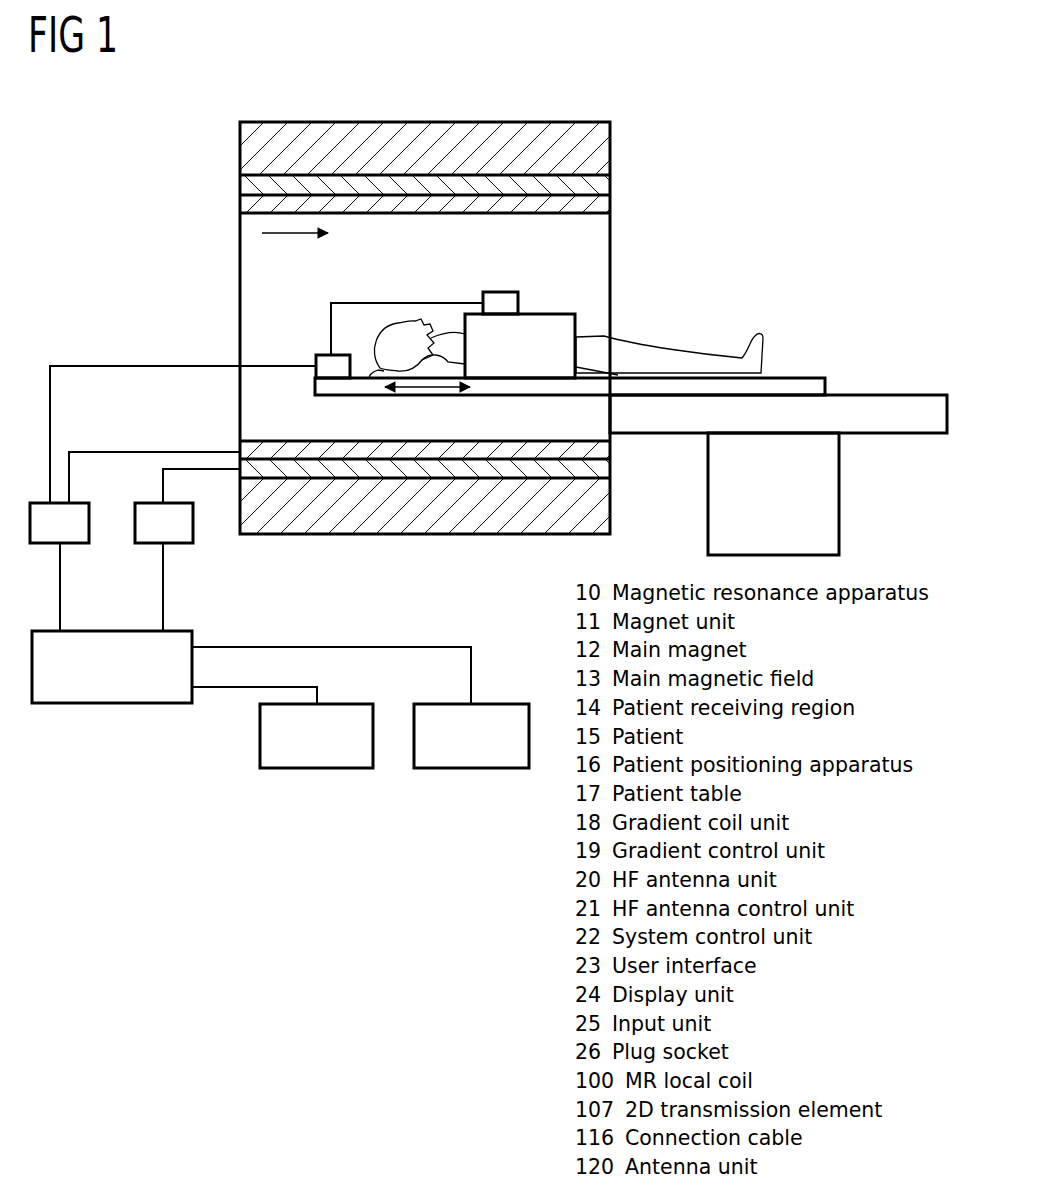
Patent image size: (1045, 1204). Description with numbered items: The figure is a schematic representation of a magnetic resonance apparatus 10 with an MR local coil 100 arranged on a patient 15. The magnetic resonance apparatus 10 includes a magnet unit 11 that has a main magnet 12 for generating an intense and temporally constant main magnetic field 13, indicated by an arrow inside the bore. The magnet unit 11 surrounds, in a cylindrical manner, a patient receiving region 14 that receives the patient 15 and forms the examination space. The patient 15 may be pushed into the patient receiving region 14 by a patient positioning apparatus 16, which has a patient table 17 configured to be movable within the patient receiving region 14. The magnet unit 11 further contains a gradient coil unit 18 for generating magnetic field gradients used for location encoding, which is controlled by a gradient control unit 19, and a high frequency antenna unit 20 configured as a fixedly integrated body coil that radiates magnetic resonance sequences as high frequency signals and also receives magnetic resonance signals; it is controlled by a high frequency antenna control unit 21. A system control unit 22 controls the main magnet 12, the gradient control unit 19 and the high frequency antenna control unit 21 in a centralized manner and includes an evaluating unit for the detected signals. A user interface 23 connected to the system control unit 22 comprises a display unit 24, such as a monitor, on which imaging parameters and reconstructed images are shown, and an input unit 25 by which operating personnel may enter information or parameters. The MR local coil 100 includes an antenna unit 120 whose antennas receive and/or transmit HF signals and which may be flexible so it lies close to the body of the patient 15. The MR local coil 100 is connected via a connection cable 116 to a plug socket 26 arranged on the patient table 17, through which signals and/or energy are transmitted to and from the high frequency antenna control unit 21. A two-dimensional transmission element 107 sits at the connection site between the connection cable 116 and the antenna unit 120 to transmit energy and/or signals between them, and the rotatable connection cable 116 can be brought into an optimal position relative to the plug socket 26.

The magnetic resonance apparatus 10 is at (784, 186).
The magnet unit 11 is at (522, 97).
The main magnet 12 is at (255, 148).
The main magnetic field 13 is at (285, 233).
The patient receiving region 14 is at (588, 231).
The patient 15 is at (723, 358).
The patient positioning apparatus 16 is at (864, 488).
The patient table 17 is at (800, 377).
The gradient coil unit 18 is at (255, 185).
The gradient control unit 19 is at (177, 547).
The high frequency antenna unit 20 is at (255, 205).
The high frequency antenna control unit 21 is at (75, 547).
The system control unit 22 is at (88, 706).
The user interface 23 is at (393, 826).
The display unit 24 is at (320, 771).
The input unit 25 is at (468, 771).
The plug socket 26 is at (320, 354).
The MR local coil 100 is at (566, 298).
The two-dimensional transmission element 107 is at (500, 292).
The connection cable 116 is at (405, 301).
The antenna unit 120 is at (546, 318).